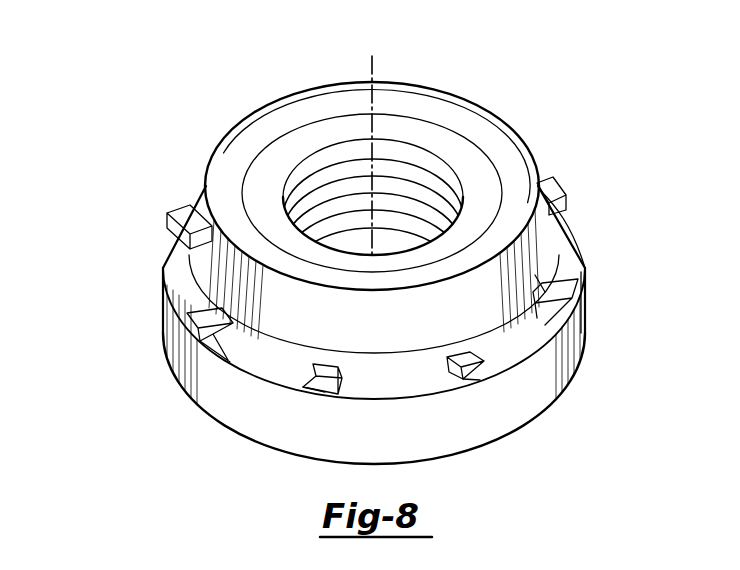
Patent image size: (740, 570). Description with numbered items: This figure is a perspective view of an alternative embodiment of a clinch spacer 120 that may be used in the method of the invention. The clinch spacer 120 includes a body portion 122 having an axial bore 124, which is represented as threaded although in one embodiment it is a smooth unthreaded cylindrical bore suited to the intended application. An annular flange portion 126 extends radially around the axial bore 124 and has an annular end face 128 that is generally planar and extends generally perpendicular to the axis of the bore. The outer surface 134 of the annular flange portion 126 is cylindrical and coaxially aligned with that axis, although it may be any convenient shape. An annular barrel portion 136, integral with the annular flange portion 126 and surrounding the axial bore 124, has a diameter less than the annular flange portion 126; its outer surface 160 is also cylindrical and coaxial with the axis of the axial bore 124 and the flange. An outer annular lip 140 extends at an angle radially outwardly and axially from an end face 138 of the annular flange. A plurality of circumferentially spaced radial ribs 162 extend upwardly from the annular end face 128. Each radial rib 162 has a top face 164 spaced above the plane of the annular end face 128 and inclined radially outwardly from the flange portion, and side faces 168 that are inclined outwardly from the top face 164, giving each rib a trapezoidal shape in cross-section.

The clinch spacer 120 is at (181, 119).
The body portion 122 is at (247, 404).
The axial bore 124 is at (337, 150).
The annular flange portion 126 is at (578, 345).
The annular end face 128 is at (560, 213).
The outer surface of the annular flange portion 134 is at (463, 412).
The annular barrel portion 136 is at (300, 322).
The end face of the annular flange 138 is at (273, 160).
The outer annular lip 140 is at (499, 113).
The outer surface of the annular barrel portion 160 is at (233, 267).
The radial ribs 162 is at (546, 280).
The top face 164 is at (190, 203).
The side faces 168 is at (165, 257).